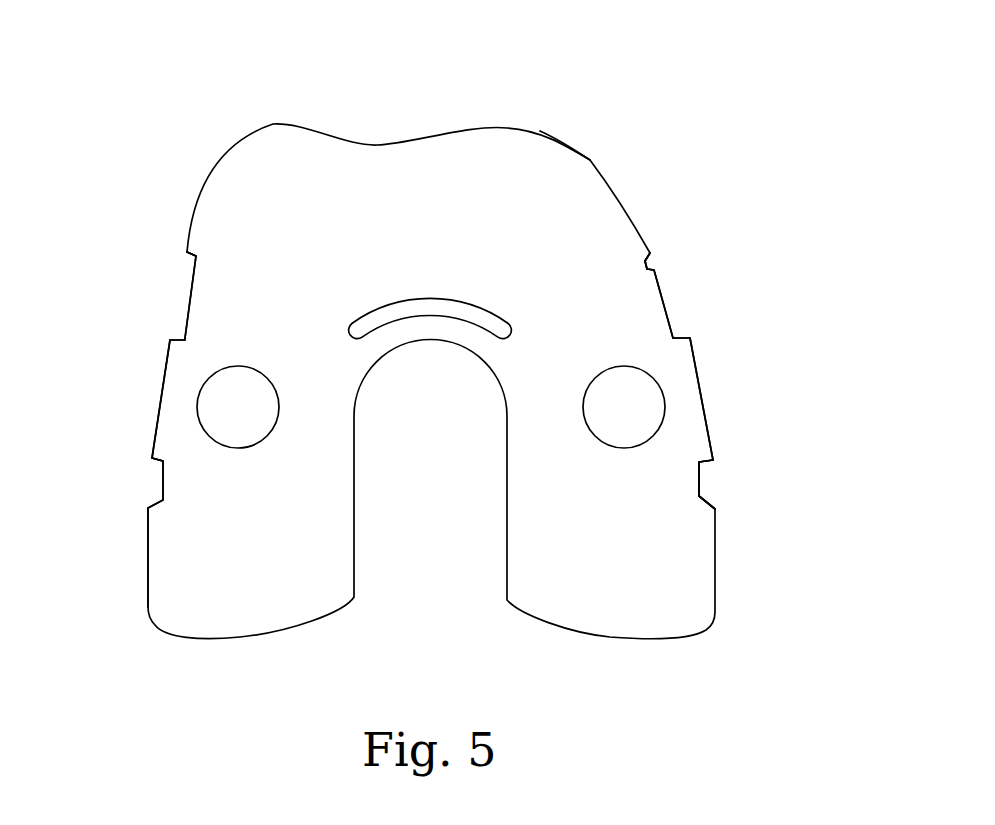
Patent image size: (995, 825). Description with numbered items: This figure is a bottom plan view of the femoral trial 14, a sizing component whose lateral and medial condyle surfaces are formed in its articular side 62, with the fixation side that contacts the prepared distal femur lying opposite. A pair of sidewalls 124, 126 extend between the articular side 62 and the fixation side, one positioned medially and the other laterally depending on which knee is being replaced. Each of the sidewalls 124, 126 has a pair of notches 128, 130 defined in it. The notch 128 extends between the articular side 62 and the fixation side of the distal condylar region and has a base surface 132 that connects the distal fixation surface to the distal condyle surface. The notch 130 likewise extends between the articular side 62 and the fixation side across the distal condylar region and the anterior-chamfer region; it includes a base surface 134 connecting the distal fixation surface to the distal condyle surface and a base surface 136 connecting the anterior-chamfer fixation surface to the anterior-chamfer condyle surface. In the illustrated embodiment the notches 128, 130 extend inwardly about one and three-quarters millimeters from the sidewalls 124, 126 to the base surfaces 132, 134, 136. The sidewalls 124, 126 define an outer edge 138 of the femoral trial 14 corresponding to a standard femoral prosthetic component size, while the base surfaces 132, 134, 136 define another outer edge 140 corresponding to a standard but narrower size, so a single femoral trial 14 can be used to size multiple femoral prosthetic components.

The femoral trial 14 is at (600, 100).
The articular side 62 is at (568, 223).
The sidewall 124 is at (698, 386).
The sidewall 126 is at (159, 393).
The notch 128 is at (137, 491).
The notch 130 is at (160, 290).
The base surface 132 is at (163, 472).
The base surface 134 is at (183, 319).
The base surface 136 is at (190, 268).
The outer edge 138 is at (147, 567).
The outer edge 140 is at (700, 497).